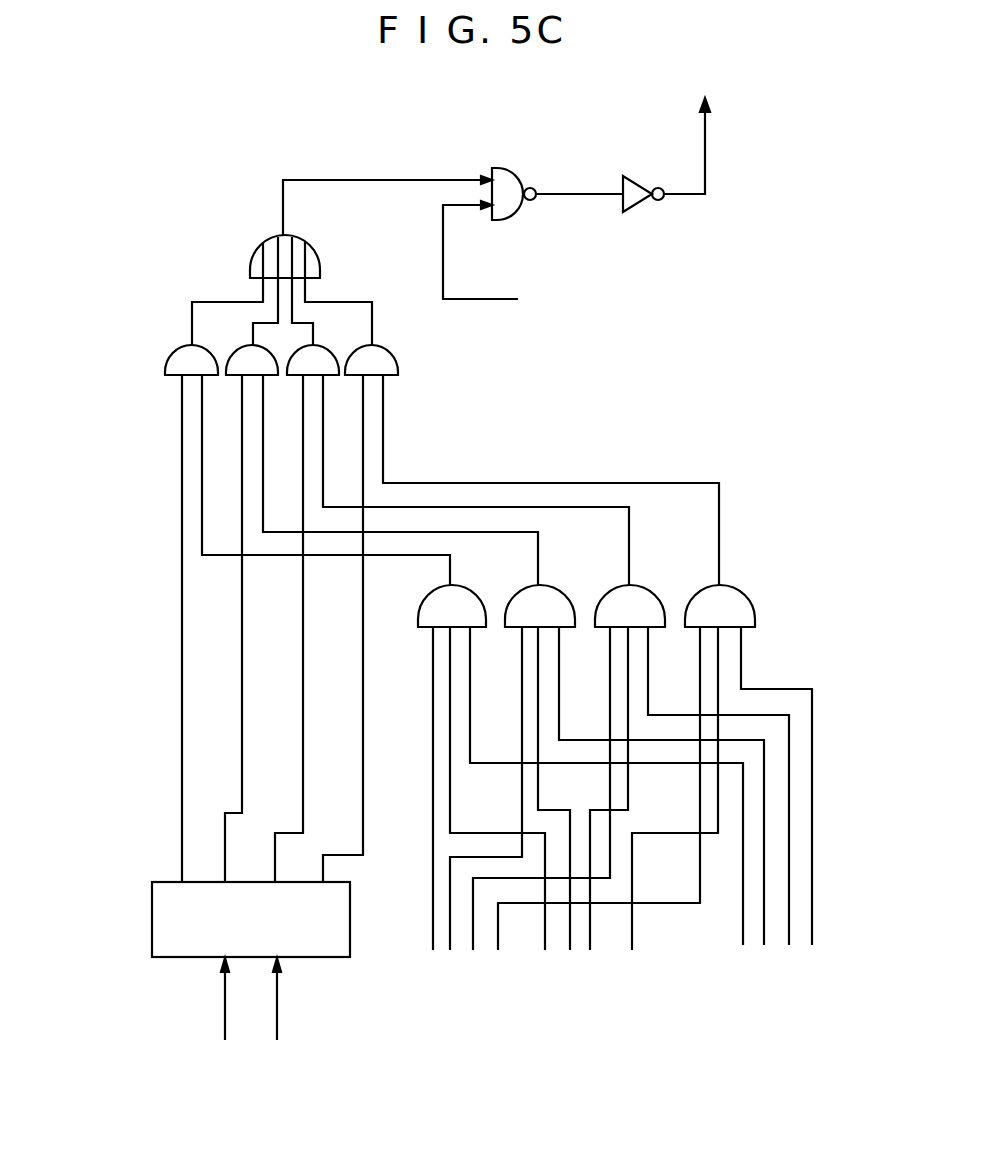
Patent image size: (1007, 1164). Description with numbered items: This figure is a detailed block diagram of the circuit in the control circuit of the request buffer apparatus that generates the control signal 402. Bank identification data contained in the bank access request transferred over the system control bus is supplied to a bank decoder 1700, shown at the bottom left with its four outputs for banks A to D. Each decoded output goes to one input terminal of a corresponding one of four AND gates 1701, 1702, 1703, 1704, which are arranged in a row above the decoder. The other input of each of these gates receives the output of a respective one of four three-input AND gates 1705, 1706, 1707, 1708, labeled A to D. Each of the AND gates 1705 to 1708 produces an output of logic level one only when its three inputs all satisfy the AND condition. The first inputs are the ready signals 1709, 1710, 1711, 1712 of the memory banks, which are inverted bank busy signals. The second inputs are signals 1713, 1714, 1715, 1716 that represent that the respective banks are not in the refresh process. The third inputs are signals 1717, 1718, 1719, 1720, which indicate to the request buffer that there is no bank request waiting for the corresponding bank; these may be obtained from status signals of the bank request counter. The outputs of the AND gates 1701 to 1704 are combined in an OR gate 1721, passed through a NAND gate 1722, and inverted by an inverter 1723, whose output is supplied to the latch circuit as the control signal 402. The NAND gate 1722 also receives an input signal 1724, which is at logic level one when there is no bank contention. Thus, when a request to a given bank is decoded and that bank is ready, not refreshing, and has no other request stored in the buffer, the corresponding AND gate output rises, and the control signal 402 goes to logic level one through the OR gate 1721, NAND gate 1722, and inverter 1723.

The control signal 402 is at (708, 137).
The bank decoder 1700 is at (350, 920).
The AND gate 1701 is at (168, 352).
The AND gate 1702 is at (238, 348).
The AND gate 1703 is at (322, 348).
The AND gate 1704 is at (390, 350).
The AND gate 1705 is at (425, 626).
The AND gate 1706 is at (563, 583).
The AND gate 1707 is at (648, 585).
The AND gate 1708 is at (748, 618).
The ready signal 1709 is at (743, 945).
The ready signal 1710 is at (764, 945).
The ready signal 1711 is at (789, 945).
The ready signal 1712 is at (812, 945).
The not-in-refresh signal 1713 is at (545, 950).
The not-in-refresh signal 1714 is at (570, 950).
The not-in-refresh signal 1715 is at (590, 950).
The not-in-refresh signal 1716 is at (632, 950).
The no-bank-request signal 1717 is at (433, 950).
The no-bank-request signal 1718 is at (450, 950).
The no-bank-request signal 1719 is at (473, 950).
The no-bank-request signal 1720 is at (498, 950).
The OR gate 1721 is at (318, 252).
The NAND gate 1722 is at (516, 220).
The inverter 1723 is at (643, 207).
The input signal 1724 is at (507, 300).